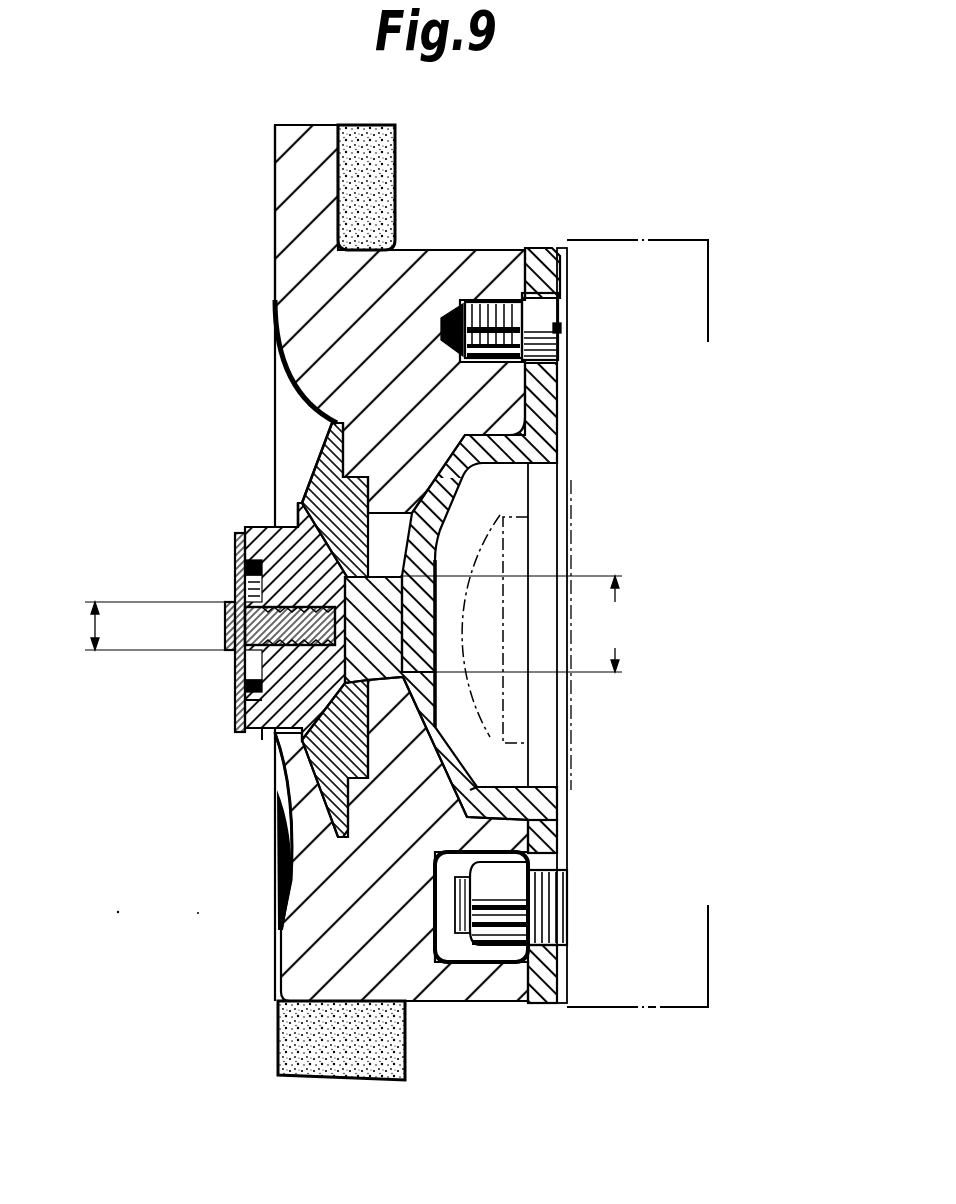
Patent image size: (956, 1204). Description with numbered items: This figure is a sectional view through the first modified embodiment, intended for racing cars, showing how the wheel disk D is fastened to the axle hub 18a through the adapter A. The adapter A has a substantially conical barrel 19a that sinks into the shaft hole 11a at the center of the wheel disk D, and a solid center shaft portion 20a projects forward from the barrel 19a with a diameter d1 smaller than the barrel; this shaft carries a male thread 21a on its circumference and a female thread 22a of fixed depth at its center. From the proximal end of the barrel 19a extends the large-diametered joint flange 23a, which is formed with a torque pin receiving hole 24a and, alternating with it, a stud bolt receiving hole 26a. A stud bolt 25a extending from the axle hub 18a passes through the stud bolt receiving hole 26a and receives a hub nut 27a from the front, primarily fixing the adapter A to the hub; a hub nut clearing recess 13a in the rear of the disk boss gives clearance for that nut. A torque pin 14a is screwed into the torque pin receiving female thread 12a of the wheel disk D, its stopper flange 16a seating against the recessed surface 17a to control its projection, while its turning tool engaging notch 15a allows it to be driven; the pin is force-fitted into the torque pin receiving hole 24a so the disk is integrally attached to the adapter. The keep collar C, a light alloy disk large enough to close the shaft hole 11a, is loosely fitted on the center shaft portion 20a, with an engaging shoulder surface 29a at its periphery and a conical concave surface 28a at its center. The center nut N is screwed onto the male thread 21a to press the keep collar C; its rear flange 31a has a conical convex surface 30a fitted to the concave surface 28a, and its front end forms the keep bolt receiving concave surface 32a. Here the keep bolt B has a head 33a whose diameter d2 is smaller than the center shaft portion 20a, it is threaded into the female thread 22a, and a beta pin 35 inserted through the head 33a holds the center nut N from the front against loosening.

The wheel disk D is at (270, 247).
The torque pin receiving female thread 12a is at (448, 312).
The torque pin 14a is at (477, 303).
The recessed surface 17a is at (512, 297).
The torque pin receiving hole 24a is at (568, 272).
The turning tool engaging notch 15a is at (565, 333).
The stopper flange 16a is at (523, 370).
The engaging shoulder surface 29a is at (332, 425).
The conical convex surface 30a is at (312, 472).
The flange 31a is at (296, 510).
The male thread 21a is at (250, 531).
The beta pin 35 is at (235, 555).
The head 33a is at (226, 616).
The keep bolt B is at (220, 640).
The keep bolt receiving concave surface 32a is at (240, 682).
The conical concave surface 28a is at (330, 700).
The center nut N is at (262, 738).
The keep collar C is at (305, 805).
The barrel 19a is at (455, 455).
The female thread 22a is at (445, 555).
The diameter of center shaft portion d1 is at (516, 624).
The diameter of keep bolt head d2 is at (136, 626).
The shaft hole 11a is at (432, 722).
The center shaft portion 20a is at (400, 748).
The adapter A is at (436, 802).
The hub nut 27a is at (500, 885).
The stud bolt receiving hole 26a is at (568, 886).
The stud bolt 25a is at (455, 893).
The hub nut clearing recess 13a is at (470, 965).
The joint flange 23a is at (547, 985).
The axle hub 18a is at (652, 1000).